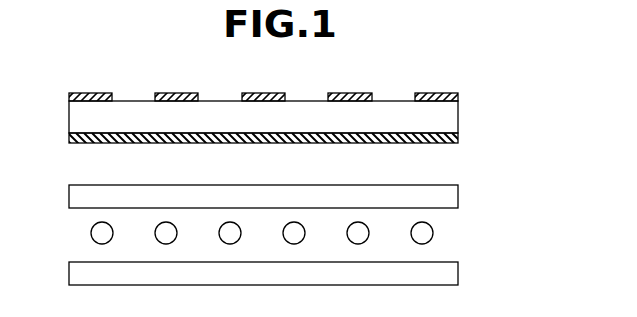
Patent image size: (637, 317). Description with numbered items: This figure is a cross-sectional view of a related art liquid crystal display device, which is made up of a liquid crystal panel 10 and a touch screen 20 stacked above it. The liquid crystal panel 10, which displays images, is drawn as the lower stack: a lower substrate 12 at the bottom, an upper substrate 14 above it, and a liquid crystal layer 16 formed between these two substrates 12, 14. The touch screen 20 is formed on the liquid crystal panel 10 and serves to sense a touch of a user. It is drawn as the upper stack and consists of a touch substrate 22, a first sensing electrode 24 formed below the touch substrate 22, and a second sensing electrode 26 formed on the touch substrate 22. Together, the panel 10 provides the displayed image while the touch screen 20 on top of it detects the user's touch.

The liquid crystal panel 10 is at (310, 235).
The lower substrate 12 is at (295, 273).
The upper substrate 14 is at (458, 195).
The liquid crystal layer 16 is at (455, 233).
The touch screen 20 is at (307, 119).
The touch substrate 22 is at (458, 119).
The first sensing electrode 24 is at (458, 140).
The second sensing electrode 26 is at (458, 97).